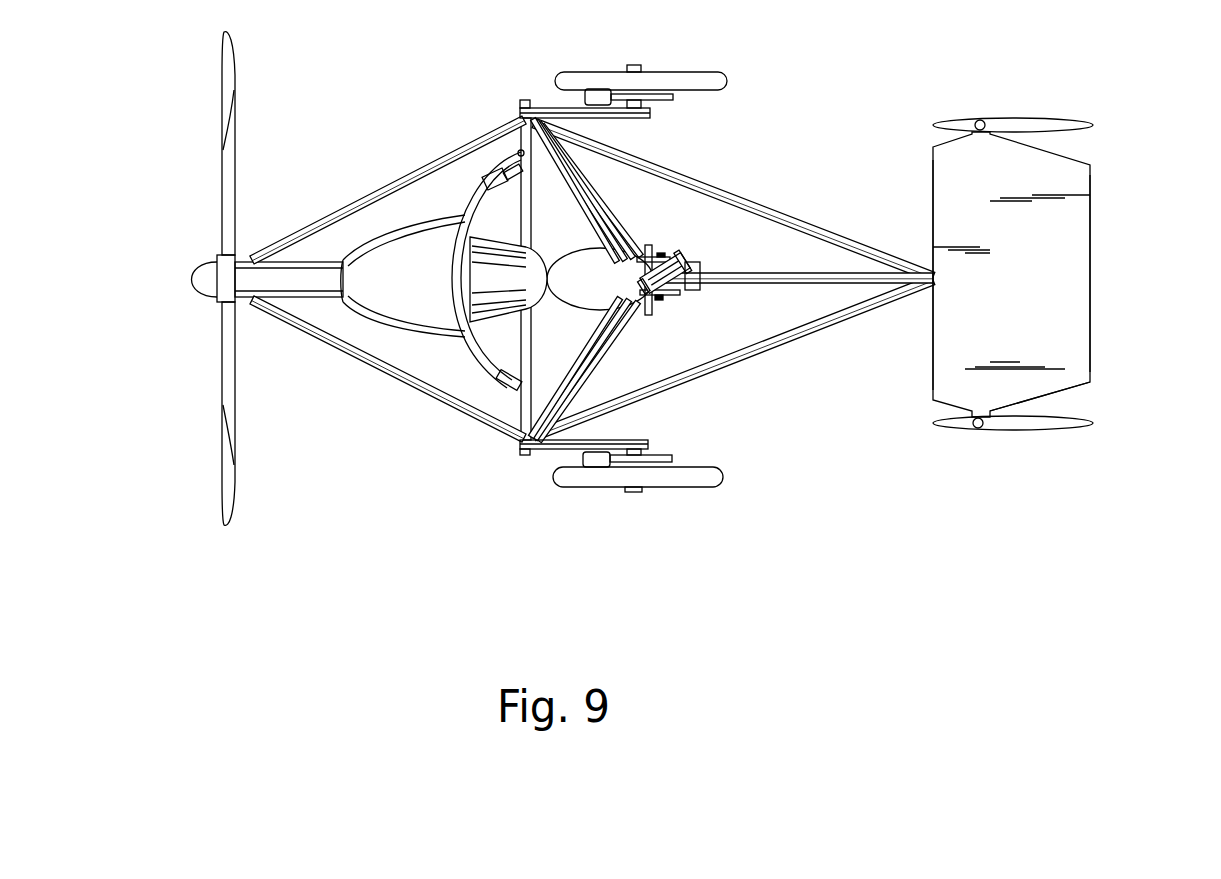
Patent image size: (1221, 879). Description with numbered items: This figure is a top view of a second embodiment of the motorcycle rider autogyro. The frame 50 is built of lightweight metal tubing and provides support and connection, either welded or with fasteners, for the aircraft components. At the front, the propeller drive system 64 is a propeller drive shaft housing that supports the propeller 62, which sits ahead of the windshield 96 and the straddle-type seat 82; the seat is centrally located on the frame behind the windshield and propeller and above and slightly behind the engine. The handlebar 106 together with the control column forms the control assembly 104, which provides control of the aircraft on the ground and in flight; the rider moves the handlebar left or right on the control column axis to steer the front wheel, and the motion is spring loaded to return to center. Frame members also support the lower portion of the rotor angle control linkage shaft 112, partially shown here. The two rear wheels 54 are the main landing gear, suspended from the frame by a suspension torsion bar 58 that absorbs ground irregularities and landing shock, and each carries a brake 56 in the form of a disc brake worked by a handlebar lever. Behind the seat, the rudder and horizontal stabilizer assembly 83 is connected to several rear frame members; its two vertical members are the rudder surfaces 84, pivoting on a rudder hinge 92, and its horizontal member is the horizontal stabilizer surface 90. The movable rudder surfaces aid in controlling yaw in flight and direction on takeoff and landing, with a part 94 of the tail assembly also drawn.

The frame 50 is at (406, 178).
The rear wheel 54 is at (700, 80).
The brake 56 is at (583, 95).
The suspension torsion bar 58 is at (520, 100).
The propeller 62 is at (222, 138).
The propeller drive system 64 is at (298, 285).
The straddle-type seat 82 is at (645, 245).
The rudder and horizontal stabilizer assembly 83 is at (1072, 243).
The rudder surface 84 is at (1033, 118).
The horizontal stabilizer surface 90 is at (948, 220).
The rudder hinge 92 is at (980, 120).
The tank bottom 94 is at (1000, 410).
The windshield 96 is at (427, 240).
The control assembly 104 is at (491, 178).
The handlebar 106 is at (483, 363).
The rotor angle control linkage shaft 112 is at (680, 298).